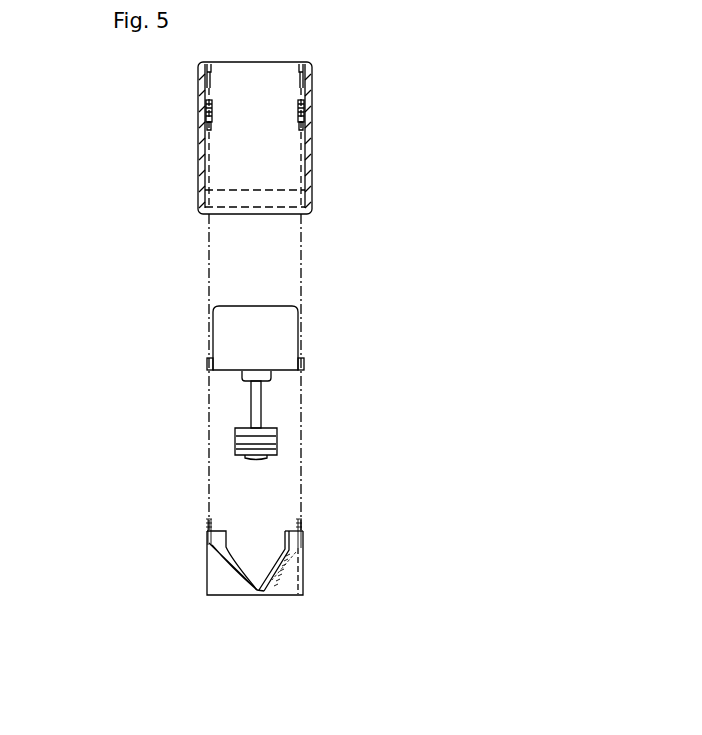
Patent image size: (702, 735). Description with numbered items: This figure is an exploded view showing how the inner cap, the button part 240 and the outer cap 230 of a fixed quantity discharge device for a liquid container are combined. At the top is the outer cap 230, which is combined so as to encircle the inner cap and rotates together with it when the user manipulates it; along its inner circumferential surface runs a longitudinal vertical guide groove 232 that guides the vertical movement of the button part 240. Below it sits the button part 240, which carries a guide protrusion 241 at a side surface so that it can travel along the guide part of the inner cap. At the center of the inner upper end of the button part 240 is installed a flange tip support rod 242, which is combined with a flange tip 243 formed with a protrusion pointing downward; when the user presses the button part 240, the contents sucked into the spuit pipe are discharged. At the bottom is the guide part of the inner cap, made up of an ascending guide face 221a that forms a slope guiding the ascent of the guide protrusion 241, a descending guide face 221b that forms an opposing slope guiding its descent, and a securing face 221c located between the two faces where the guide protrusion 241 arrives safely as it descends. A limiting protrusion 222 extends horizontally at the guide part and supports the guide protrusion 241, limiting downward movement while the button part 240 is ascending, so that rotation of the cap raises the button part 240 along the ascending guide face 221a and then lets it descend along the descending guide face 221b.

The outer cap 230 is at (308, 142).
The vertical guide groove 232 is at (302, 89).
The button part 240 is at (277, 337).
The guide protrusion 241 is at (304, 365).
The flange tip support rod 242 is at (257, 408).
The flange tip 243 is at (257, 442).
The limiting protrusion 222 is at (214, 548).
The ascending guide face 221a is at (218, 558).
The descending guide face 221b is at (290, 546).
The securing face 221c is at (272, 580).